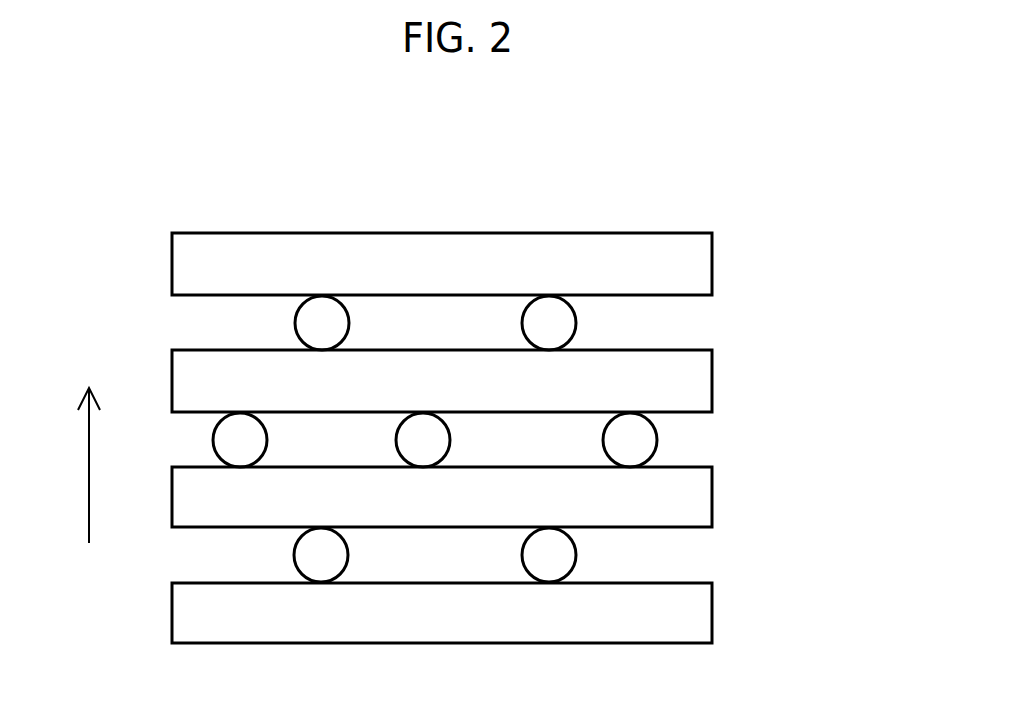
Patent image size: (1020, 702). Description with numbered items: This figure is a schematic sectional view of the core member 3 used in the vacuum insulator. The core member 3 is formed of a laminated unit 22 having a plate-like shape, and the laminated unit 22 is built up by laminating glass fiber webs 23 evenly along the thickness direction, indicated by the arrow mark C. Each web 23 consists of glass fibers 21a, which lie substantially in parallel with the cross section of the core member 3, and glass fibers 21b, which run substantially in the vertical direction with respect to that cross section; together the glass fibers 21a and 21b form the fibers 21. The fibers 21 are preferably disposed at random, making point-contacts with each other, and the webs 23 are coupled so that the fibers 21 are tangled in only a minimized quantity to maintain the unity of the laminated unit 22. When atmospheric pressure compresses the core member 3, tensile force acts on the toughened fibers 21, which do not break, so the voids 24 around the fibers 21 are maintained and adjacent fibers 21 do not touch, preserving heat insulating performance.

The core member 3 is at (369, 218).
The glass fibers 21 is at (538, 155).
The glass fibers 21a is at (673, 258).
The glass fibers 21b is at (543, 317).
The laminated unit 22 is at (815, 228).
The glass fiber web 23 is at (728, 233).
The voids 24 is at (322, 440).
The thickness direction C is at (98, 465).